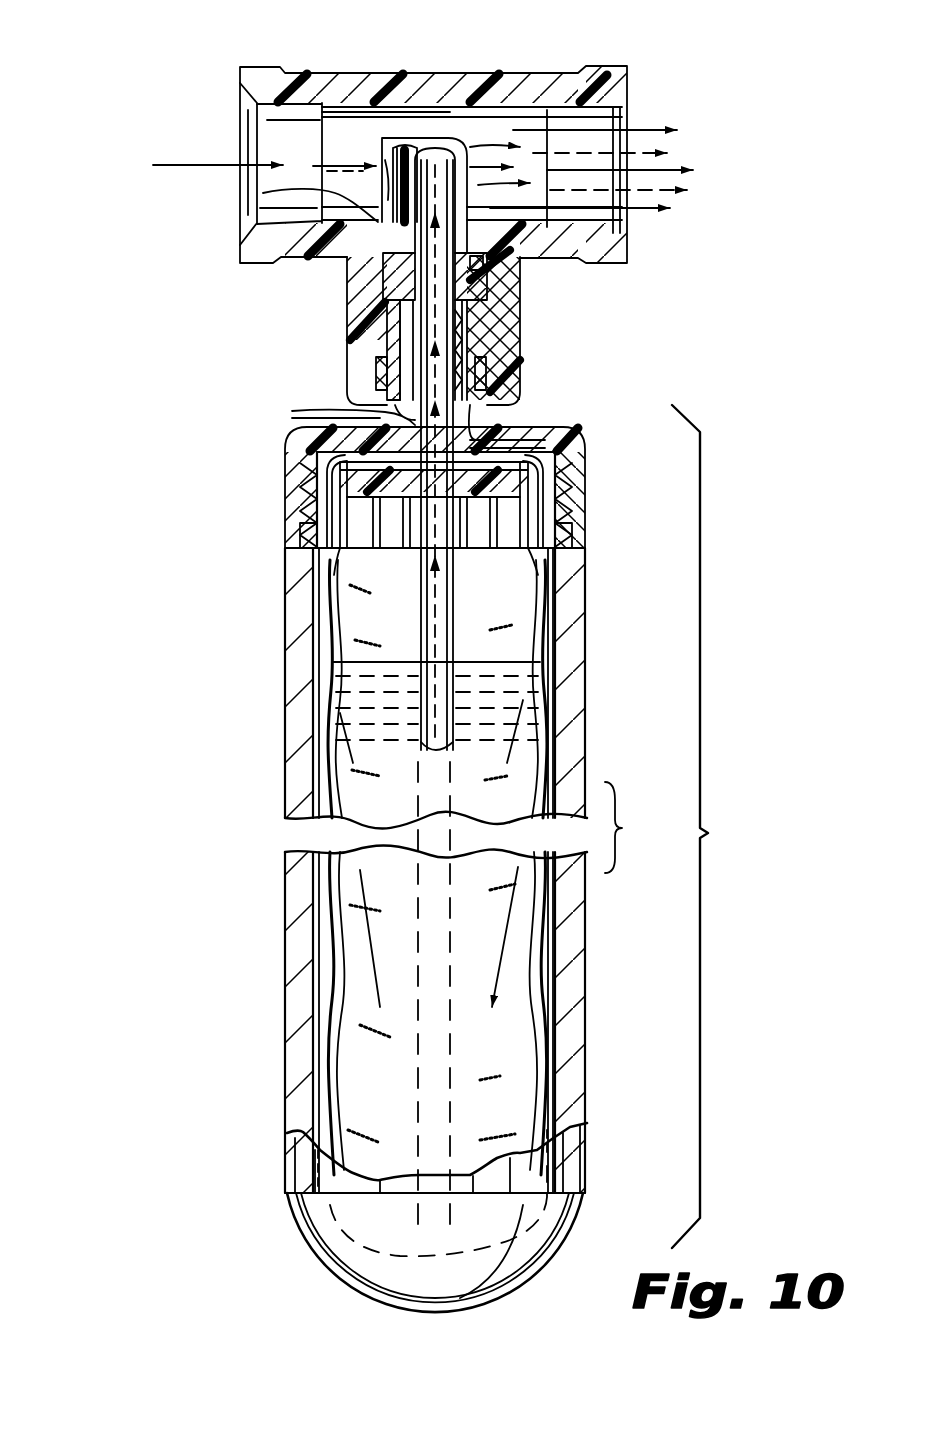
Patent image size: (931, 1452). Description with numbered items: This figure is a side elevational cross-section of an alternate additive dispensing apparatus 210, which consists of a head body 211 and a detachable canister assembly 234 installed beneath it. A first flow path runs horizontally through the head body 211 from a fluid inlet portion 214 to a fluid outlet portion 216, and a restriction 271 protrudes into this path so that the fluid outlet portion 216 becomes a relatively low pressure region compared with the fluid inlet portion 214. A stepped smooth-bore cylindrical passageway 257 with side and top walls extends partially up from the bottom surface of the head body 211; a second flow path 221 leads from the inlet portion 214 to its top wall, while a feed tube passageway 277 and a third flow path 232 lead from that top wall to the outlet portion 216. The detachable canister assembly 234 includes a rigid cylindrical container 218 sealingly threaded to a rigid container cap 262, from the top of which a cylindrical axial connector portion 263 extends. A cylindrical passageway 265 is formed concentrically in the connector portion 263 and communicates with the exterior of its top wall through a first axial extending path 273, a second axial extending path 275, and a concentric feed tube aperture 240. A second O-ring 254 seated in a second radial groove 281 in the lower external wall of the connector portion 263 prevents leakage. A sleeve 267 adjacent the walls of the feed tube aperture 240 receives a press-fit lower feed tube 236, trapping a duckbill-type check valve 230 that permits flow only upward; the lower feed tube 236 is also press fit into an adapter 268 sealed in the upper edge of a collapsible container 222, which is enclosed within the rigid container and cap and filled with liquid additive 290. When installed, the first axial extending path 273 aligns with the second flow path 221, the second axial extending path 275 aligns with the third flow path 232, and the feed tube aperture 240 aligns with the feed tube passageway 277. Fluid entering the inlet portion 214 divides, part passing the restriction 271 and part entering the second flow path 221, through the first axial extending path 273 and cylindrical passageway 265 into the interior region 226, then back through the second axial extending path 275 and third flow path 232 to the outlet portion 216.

The additive dispensing apparatus 210 is at (191, 710).
The head body 211 is at (300, 72).
The fluid inlet portion 214 is at (238, 125).
The fluid outlet portion 216 is at (620, 105).
The rigid cylindrical container 218 is at (285, 932).
The second flow path 221 is at (263, 193).
The collapsible container 222 is at (362, 1020).
The interior region 226 is at (316, 598).
The duckbill-type check valve 230 is at (525, 448).
The third flow path 232 is at (520, 250).
The detachable canister assembly 234 is at (713, 826).
The lower feed tube 236 is at (452, 592).
The feed tube aperture 240 is at (505, 300).
The second O-ring 254 is at (378, 378).
The stepped smooth-bore cylindrical passageway 257 is at (400, 340).
The rigid container cap 262 is at (322, 450).
The cylindrical axial connector portion 263 is at (490, 385).
The cylindrical passageway 265 is at (392, 300).
The sleeve 267 is at (498, 355).
The adapter 268 is at (334, 575).
The restriction 271 is at (393, 140).
The first axial extending path 273 is at (348, 268).
The second axial extending path 275 is at (510, 265).
The feed tube passageway 277 is at (430, 145).
The second radial groove 281 is at (350, 412).
The liquid additive 290 is at (420, 680).